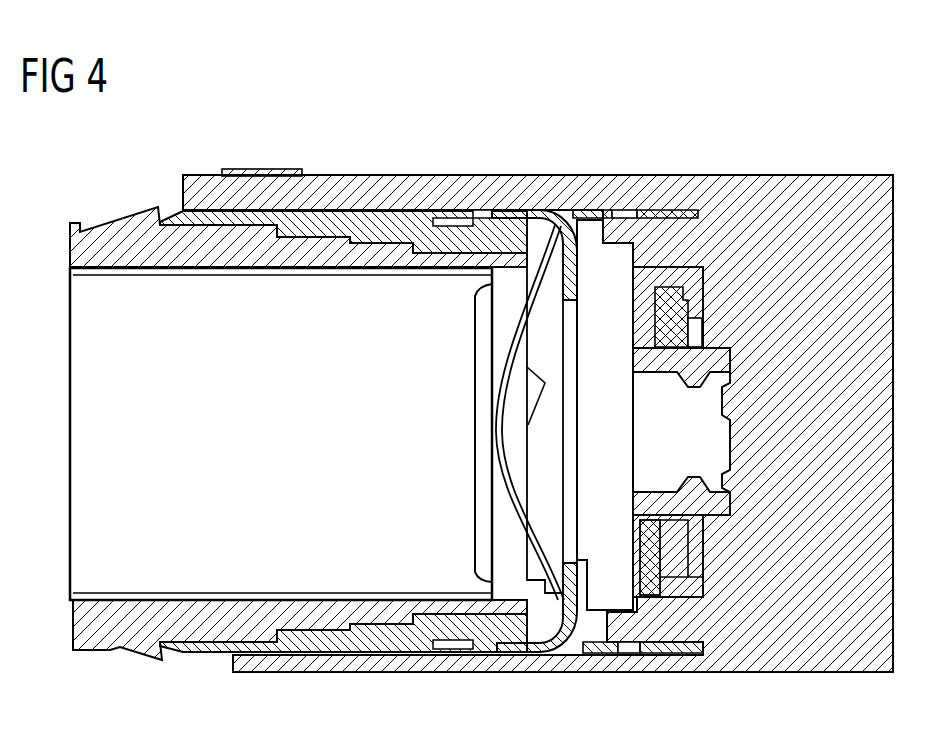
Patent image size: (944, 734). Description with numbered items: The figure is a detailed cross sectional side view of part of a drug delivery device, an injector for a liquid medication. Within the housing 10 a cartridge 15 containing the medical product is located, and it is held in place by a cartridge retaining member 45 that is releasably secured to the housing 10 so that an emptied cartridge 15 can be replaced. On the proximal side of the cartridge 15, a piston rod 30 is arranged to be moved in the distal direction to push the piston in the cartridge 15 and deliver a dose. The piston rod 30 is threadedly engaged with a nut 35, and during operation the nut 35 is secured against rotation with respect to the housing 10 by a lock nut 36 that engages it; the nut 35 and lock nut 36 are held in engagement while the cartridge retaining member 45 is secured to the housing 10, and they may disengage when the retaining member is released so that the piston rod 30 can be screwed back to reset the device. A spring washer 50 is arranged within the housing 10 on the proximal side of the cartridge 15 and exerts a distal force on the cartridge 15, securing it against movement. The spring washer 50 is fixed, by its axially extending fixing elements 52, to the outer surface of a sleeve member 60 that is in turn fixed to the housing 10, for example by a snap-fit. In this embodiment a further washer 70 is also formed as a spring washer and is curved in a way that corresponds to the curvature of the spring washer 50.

The housing 10 is at (773, 657).
The cartridge 15 is at (85, 428).
The piston rod 30 is at (718, 445).
The nut 35 is at (688, 303).
The lock nut 36 is at (637, 527).
The cartridge retaining member 45 is at (122, 232).
The spring washer 50 is at (538, 315).
The fixing elements 52 is at (517, 207).
The sleeve member 60 is at (480, 207).
The further washer 70 is at (660, 204).